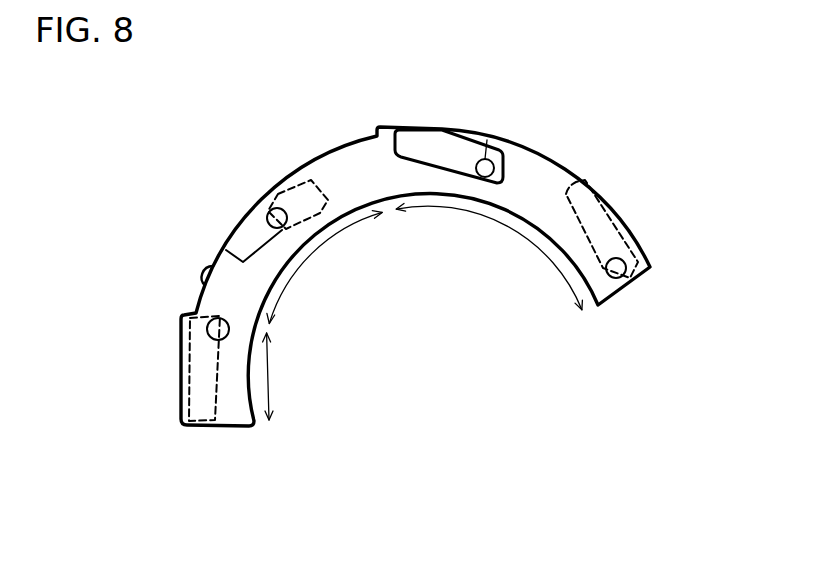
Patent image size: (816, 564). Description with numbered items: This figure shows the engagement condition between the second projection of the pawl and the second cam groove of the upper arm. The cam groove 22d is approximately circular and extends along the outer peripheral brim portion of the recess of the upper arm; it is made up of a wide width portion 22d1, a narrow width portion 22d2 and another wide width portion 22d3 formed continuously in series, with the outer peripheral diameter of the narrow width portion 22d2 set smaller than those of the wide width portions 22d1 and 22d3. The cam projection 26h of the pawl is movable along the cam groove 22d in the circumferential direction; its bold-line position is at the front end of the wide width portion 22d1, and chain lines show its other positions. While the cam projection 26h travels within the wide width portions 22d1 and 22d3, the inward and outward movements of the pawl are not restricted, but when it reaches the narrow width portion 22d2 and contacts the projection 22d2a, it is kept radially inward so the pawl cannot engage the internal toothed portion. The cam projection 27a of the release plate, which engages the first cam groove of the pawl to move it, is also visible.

The cam groove 22d is at (537, 145).
The wide width portion 22d1 is at (512, 226).
The narrow width portion 22d2 is at (312, 252).
The projection 22d2a is at (205, 280).
The wide width portion 22d3 is at (268, 383).
The cam projection 26h is at (425, 129).
The cam projection 27a is at (496, 128).